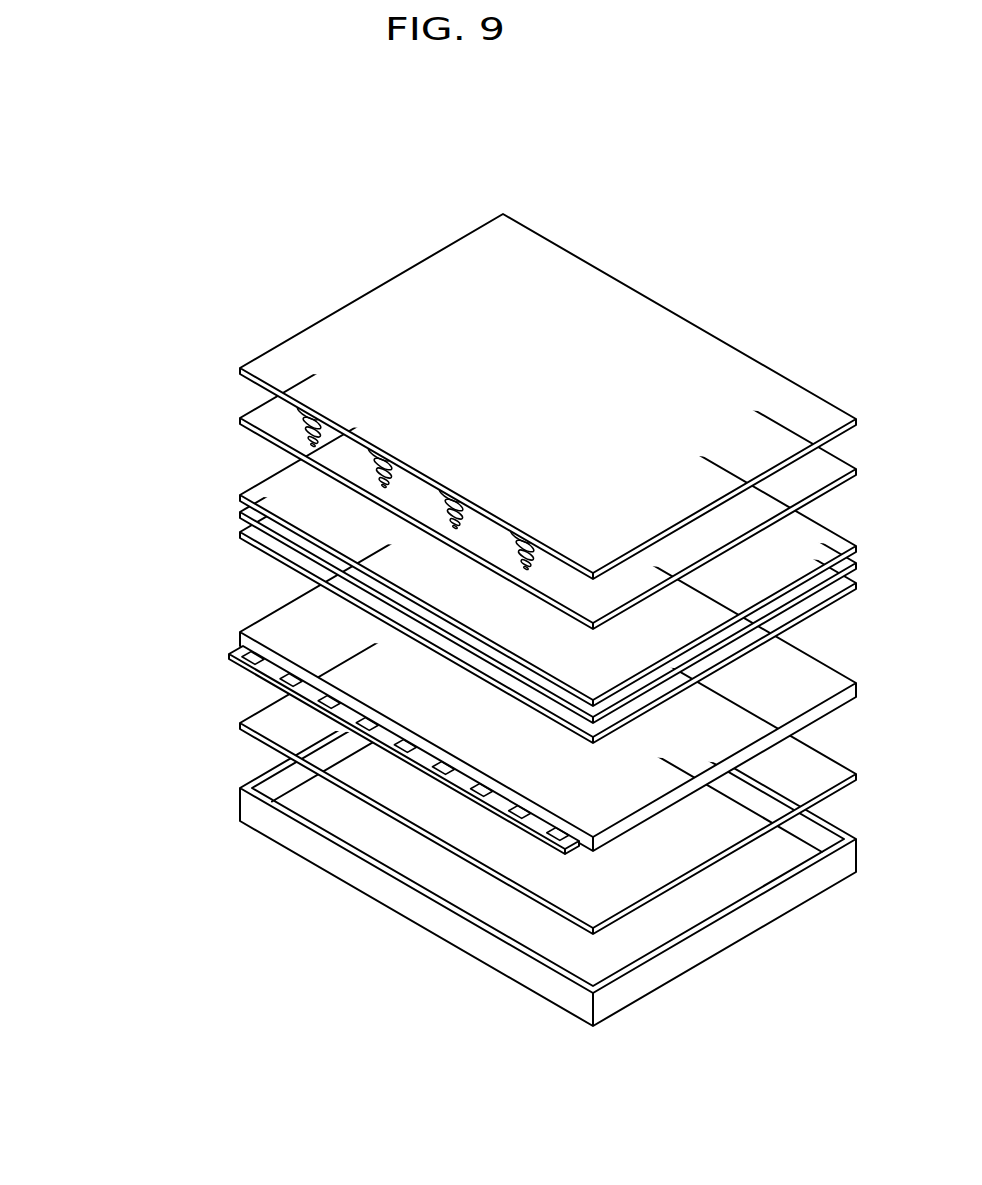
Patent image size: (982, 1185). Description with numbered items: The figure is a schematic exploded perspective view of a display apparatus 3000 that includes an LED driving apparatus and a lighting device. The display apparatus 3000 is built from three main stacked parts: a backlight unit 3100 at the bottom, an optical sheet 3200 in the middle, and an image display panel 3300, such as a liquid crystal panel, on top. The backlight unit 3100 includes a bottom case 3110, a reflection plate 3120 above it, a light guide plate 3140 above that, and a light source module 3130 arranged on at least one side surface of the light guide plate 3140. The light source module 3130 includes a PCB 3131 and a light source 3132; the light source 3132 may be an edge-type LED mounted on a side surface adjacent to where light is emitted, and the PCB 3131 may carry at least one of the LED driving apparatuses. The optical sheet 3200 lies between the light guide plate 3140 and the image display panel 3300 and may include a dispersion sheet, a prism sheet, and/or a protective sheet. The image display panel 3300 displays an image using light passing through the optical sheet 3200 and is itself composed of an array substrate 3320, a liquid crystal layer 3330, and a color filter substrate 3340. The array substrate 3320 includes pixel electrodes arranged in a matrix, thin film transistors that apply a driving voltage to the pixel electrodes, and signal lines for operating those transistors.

The display apparatus 3000 is at (806, 219).
The image display panel 3300 is at (120, 343).
The color filter substrate 3340 is at (278, 365).
The liquid crystal layer 3330 is at (288, 416).
The array substrate 3320 is at (270, 422).
The optical sheet 3200 is at (203, 493).
The backlight unit 3100 is at (120, 618).
The light guide plate 3140 is at (278, 635).
The light source module 3130 is at (243, 669).
The PCB 3131 is at (540, 825).
The light source 3132 is at (478, 792).
The reflection plate 3120 is at (265, 723).
The bottom case 3110 is at (255, 810).